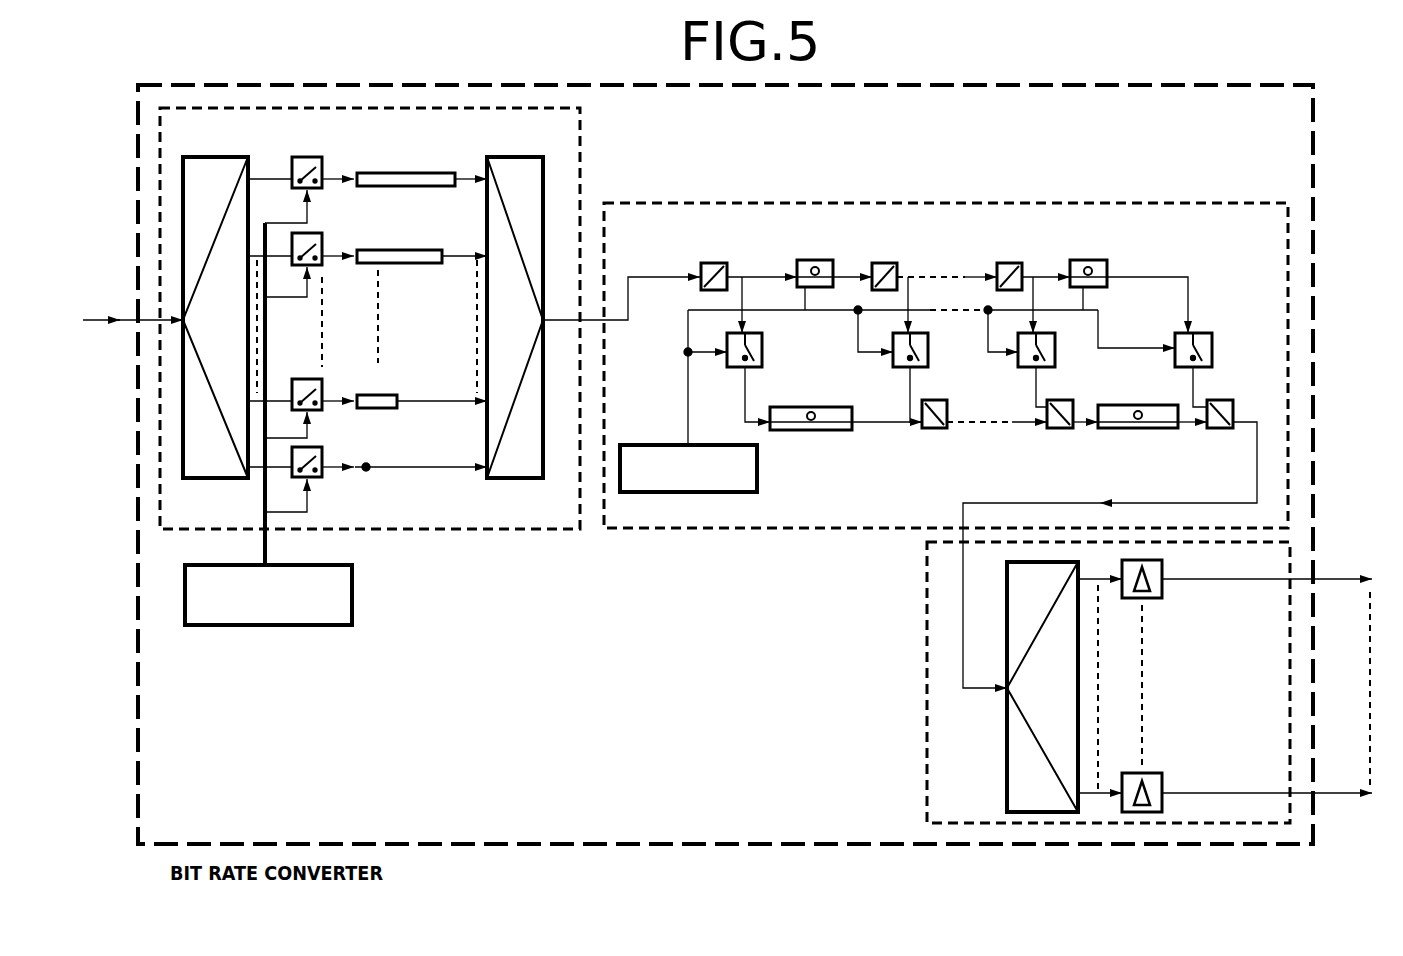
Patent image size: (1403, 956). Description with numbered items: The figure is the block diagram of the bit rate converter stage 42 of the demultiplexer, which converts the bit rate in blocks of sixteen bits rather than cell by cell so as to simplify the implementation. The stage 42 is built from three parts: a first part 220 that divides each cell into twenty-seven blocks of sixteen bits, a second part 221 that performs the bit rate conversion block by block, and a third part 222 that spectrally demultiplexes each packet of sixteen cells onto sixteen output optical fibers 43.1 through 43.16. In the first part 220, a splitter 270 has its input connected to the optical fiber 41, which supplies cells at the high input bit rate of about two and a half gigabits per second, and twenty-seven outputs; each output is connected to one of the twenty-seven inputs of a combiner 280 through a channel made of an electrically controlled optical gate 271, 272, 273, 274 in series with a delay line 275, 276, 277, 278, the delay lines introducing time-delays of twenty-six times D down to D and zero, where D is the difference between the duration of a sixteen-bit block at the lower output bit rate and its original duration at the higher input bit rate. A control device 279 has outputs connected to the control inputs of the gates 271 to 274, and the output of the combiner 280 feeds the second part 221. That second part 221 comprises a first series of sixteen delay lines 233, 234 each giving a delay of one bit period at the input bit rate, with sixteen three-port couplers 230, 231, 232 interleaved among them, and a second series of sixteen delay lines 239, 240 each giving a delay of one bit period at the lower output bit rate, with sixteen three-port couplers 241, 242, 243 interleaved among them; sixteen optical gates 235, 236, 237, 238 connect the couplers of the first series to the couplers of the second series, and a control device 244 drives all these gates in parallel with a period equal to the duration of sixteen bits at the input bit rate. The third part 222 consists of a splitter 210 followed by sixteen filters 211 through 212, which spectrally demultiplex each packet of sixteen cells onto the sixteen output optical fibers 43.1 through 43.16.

The bit rate converter stage 42 is at (247, 84).
The optical fiber 41 is at (97, 318).
The first part 220 is at (493, 530).
The second part 221 is at (1050, 203).
The third part 222 is at (926, 603).
The splitter 270 is at (230, 167).
The electrically controlled optical gate 271 is at (306, 157).
The electrically controlled optical gate 272 is at (312, 228).
The electrically controlled optical gate 273 is at (303, 377).
The electrically controlled optical gate 274 is at (315, 480).
The delay line 275 is at (447, 172).
The delay line 276 is at (427, 265).
The delay line 277 is at (397, 408).
The delay line 278 is at (373, 473).
The control device 279 is at (343, 597).
The combiner 280 is at (517, 166).
The three-port coupler 230 is at (715, 262).
The three-port coupler 231 is at (886, 262).
The three-port coupler 232 is at (1007, 262).
The delay line 233 is at (820, 260).
The delay line 234 is at (1087, 258).
The optical gate 235 is at (763, 357).
The optical gate 236 is at (932, 355).
The optical gate 237 is at (1056, 354).
The optical gate 238 is at (1213, 354).
The delay line 239 is at (837, 430).
The delay line 240 is at (1135, 428).
The three-port coupler 241 is at (940, 428).
The three-port coupler 242 is at (1062, 428).
The three-port coupler 243 is at (1207, 428).
The control device 244 is at (760, 475).
The splitter 210 is at (1015, 725).
The filter 211 is at (1157, 598).
The filter 212 is at (1148, 775).
The output optical fiber 43.1 is at (1352, 552).
The output optical fiber 43.16 is at (1362, 762).